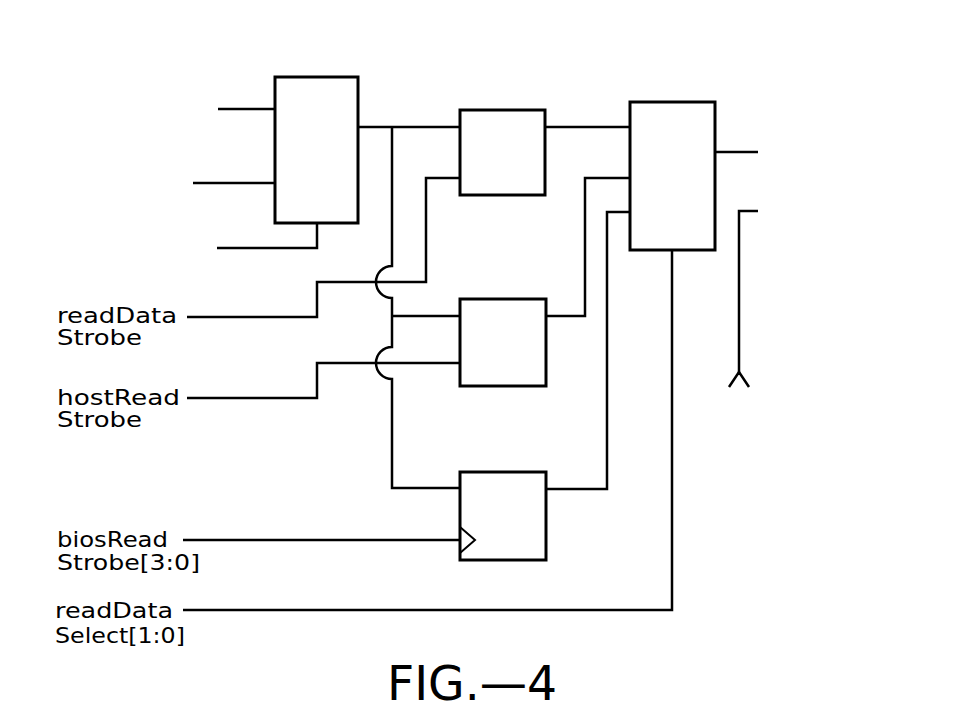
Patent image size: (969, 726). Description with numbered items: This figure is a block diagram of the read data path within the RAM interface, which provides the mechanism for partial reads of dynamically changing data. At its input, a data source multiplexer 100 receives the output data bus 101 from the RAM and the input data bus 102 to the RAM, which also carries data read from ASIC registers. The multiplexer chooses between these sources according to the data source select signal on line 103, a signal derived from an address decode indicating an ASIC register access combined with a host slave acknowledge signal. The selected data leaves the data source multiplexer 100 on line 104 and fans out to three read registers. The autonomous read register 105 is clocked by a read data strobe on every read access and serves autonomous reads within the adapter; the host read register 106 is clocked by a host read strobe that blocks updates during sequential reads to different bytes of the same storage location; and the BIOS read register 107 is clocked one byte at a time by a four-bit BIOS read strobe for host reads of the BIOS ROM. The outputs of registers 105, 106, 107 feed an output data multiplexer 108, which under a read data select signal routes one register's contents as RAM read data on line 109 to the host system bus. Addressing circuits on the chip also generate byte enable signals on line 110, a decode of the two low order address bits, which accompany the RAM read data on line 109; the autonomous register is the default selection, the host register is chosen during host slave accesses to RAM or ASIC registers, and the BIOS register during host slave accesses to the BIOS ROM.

The data source multiplexer 100 is at (352, 77).
The output data bus 101 is at (247, 109).
The input data bus 102 is at (243, 183).
The data source select line 103 is at (248, 248).
The multiplexer output line 104 is at (435, 125).
The autonomous read register 105 is at (500, 196).
The host read register 106 is at (505, 387).
The BIOS read register 107 is at (505, 561).
The output data multiplexer 108 is at (709, 102).
The RAM read data line 109 is at (731, 152).
The byte enable signal line 110 is at (749, 211).